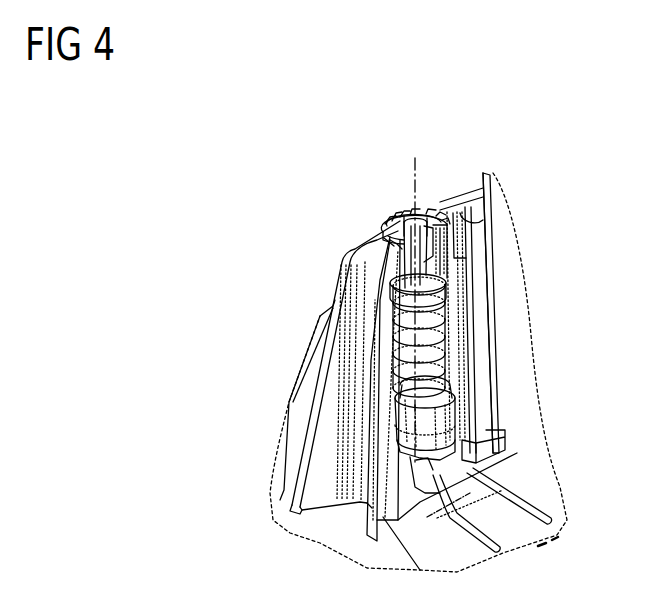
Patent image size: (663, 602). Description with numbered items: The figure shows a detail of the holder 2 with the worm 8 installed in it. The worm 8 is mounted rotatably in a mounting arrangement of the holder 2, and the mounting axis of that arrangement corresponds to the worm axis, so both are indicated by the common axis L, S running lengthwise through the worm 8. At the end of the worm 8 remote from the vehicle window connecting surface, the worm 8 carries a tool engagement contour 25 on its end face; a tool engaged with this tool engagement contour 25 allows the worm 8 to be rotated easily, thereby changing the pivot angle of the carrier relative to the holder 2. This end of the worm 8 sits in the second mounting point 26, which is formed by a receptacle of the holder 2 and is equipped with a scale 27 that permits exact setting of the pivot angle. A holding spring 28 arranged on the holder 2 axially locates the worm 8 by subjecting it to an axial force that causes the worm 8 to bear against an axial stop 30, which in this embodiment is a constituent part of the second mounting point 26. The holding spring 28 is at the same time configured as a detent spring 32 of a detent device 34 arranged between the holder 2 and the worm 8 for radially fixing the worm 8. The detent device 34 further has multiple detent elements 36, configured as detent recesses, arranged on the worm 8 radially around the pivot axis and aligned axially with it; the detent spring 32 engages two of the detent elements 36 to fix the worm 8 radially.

The holder 2 is at (540, 497).
The worm 8 is at (442, 342).
The tool engagement contour 25 is at (426, 217).
The second mounting point 26 is at (443, 247).
The scale 27 is at (388, 220).
The holding spring 28 is at (470, 500).
The axial stop 30 is at (448, 273).
The detent spring 32 is at (458, 480).
The detent device 34 is at (467, 436).
The detent elements 36 is at (430, 451).
The mounting axis and worm axis LS is at (413, 170).